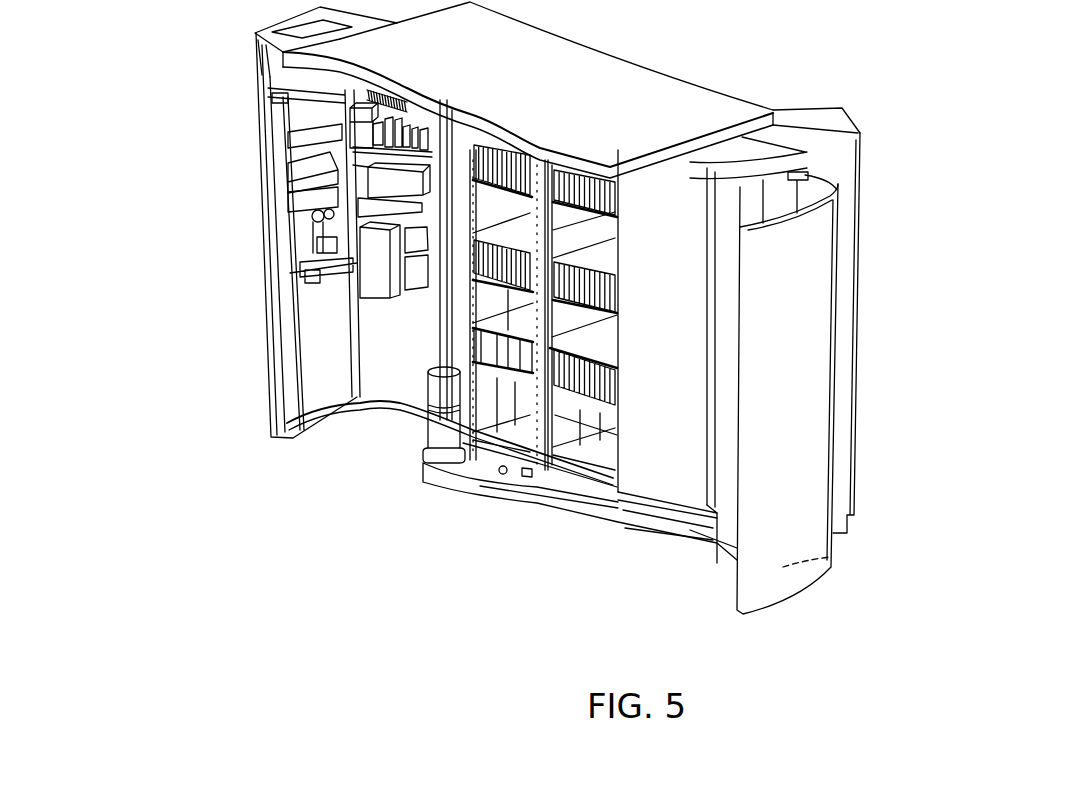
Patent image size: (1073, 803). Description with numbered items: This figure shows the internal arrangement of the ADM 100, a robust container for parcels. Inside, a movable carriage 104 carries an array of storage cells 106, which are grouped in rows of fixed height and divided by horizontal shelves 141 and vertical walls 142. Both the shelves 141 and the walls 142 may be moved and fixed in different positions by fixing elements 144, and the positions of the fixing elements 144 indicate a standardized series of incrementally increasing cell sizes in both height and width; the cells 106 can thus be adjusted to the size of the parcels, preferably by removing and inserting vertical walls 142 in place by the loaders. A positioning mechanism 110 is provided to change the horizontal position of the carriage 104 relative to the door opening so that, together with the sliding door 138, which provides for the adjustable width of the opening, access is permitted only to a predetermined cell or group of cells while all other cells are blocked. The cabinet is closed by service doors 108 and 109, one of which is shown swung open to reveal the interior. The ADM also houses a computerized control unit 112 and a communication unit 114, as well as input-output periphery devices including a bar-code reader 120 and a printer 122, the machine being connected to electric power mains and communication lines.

The ADM 100 is at (895, 221).
The movable carriage 104 is at (577, 437).
The storage cell 106 is at (600, 346).
The service door 108 is at (860, 568).
The service door 109 is at (268, 383).
The positioning mechanism 110 is at (830, 131).
The computerized control unit 112 is at (391, 185).
The communication unit 114 is at (257, 48).
The bar-code reader 120 is at (320, 287).
The printer 122 is at (290, 190).
The sliding door 138 is at (697, 383).
The horizontal shelf 141 is at (583, 398).
The vertical wall 142 is at (467, 302).
The fixing element 144 is at (577, 220).